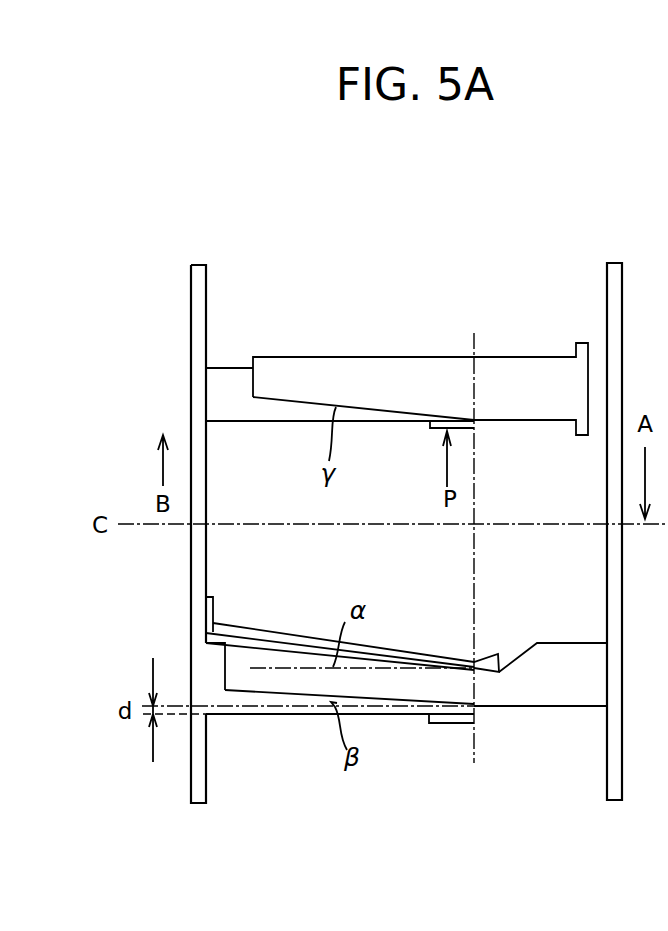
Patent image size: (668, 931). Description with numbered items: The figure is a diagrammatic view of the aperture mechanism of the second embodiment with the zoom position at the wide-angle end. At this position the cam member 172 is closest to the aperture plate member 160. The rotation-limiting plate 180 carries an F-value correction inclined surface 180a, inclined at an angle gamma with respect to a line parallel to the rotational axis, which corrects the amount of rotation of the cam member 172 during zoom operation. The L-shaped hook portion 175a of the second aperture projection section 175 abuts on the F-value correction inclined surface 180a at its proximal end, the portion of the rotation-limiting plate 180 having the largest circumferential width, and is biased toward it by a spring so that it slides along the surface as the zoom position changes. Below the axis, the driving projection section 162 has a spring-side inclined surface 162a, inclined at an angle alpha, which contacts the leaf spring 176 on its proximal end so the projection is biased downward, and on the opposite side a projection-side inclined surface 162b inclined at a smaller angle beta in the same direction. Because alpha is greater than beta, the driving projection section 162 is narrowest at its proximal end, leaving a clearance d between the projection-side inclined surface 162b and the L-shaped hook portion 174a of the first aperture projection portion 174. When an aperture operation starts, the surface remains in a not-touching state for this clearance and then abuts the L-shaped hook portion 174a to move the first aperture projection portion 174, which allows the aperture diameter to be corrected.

The aperture plate member 160 is at (617, 268).
The driving projection section 162 is at (548, 707).
The spring-side inclined surface 162a is at (317, 650).
The projection-side inclined surface 162b is at (292, 694).
The cam member 172 is at (200, 265).
The first aperture projection portion 174 is at (233, 715).
The L-shaped hook portion 174a is at (444, 723).
The second aperture projection section 175 is at (240, 377).
The L-shaped hook portion 175a is at (438, 430).
The leaf spring 176 is at (413, 657).
The rotation-limiting plate 180 is at (392, 372).
The F-value correction inclined surface 180a is at (277, 402).